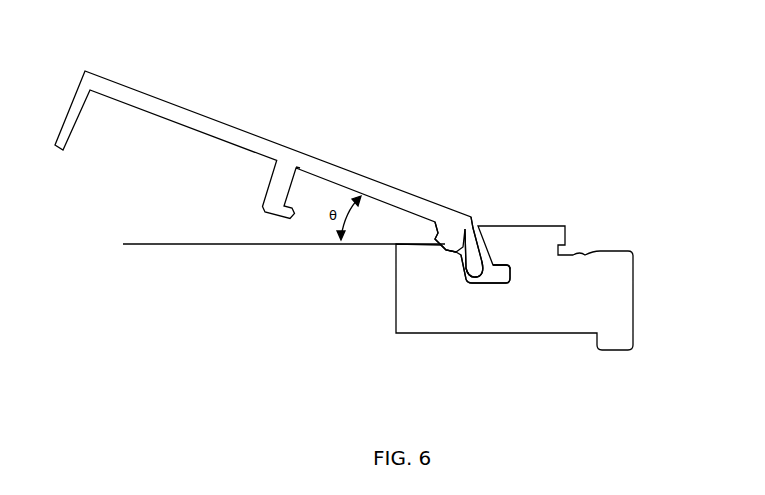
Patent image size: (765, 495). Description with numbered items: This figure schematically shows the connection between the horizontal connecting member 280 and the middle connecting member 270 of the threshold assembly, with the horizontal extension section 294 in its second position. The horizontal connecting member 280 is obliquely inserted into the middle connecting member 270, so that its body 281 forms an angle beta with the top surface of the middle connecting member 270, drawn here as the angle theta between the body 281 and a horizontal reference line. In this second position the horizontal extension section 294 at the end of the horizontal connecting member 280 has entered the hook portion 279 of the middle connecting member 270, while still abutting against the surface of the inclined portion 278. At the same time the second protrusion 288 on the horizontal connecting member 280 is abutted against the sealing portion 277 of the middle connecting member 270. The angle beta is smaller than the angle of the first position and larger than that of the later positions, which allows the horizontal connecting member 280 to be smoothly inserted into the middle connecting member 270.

The middle connecting member 270 is at (646, 319).
The sealing portion 277 is at (443, 245).
The inclined portion 278 is at (494, 276).
The hook portion 279 is at (500, 275).
The horizontal connecting member 280 is at (356, 108).
The body 281 is at (202, 123).
The second protrusion 288 is at (469, 230).
The horizontal extension section 294 is at (474, 268).